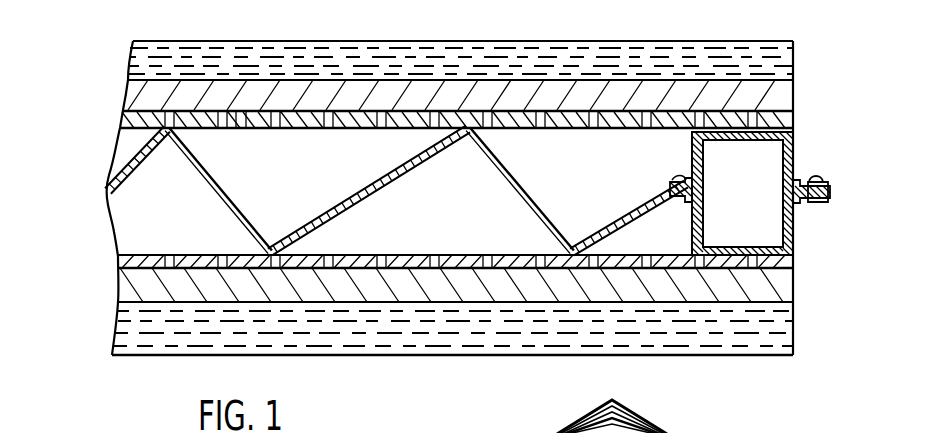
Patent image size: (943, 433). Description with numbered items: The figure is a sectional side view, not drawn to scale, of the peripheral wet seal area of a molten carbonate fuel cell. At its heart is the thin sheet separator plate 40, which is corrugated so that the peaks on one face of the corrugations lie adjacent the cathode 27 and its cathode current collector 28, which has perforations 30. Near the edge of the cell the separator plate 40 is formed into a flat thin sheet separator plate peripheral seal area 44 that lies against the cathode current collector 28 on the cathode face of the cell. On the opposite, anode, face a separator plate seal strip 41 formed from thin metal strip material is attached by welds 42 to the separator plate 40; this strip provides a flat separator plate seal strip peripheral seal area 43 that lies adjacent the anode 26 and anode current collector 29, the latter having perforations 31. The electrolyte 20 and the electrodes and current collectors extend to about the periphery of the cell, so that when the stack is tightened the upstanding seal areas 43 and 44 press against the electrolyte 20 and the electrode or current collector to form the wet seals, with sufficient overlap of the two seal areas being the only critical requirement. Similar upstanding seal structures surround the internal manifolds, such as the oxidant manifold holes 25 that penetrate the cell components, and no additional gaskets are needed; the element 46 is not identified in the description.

In FIG. 1, the electrolyte 20 is at (132, 63).
In FIG. 1, the anode 26 is at (128, 94).
In FIG. 1, the cathode 27 is at (120, 292).
In FIG. 1, the cathode current collector 28 is at (122, 257).
In FIG. 1, the anode current collector 29 is at (124, 119).
In FIG. 1, the perforations 30 is at (166, 255).
In FIG. 1, the perforations 31 is at (246, 129).
In FIG. 1, the separator plate 40 is at (122, 153).
In FIG. 1, the separator plate seal strip 41 is at (781, 192).
In FIG. 1, the welds 42 is at (681, 186).
In FIG. 1, the separator plate seal strip peripheral seal area 43 is at (775, 127).
In FIG. 1, the separator plate peripheral seal area 44 is at (797, 262).
In FIG. 2, the oxidant manifold holes 25 is at (655, 420).
In FIG. 2, the layered element 46 is at (560, 428).